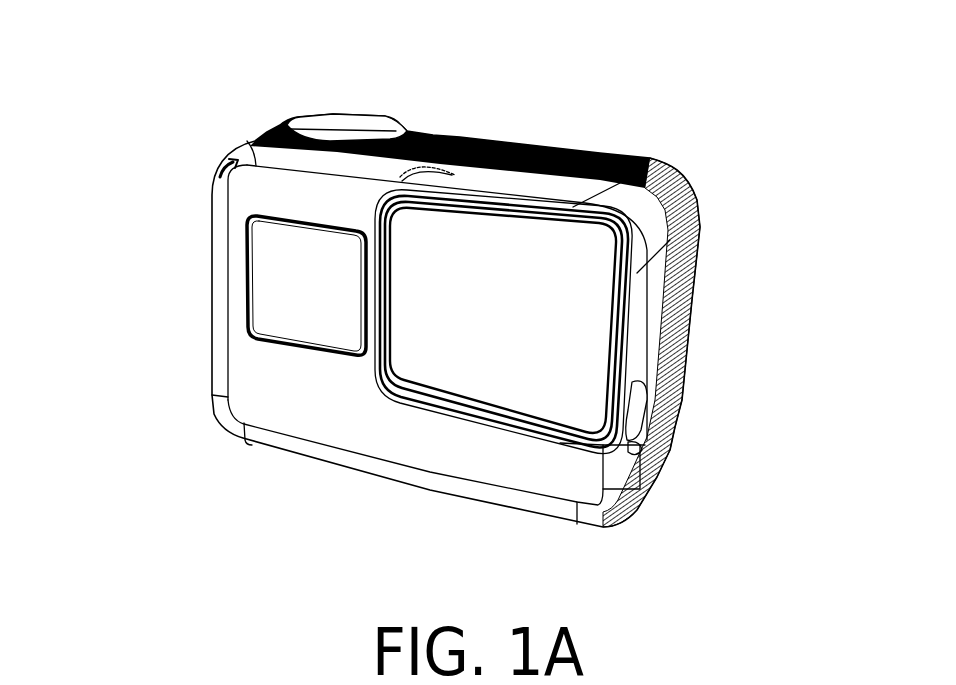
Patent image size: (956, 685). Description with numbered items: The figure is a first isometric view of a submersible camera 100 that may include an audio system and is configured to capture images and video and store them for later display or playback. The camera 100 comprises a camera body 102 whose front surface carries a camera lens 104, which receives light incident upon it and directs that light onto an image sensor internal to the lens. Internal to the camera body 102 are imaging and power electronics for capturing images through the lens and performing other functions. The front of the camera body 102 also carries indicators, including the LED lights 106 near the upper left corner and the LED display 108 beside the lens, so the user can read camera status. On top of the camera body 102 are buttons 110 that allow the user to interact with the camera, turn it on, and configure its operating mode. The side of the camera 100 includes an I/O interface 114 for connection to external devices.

The camera 100 is at (568, 48).
The camera body 102 is at (603, 152).
The camera lens 104 is at (567, 337).
The LED lights 106 is at (214, 160).
The LED display 108 is at (261, 298).
The buttons 110 is at (337, 110).
The I/O interface 114 is at (668, 446).